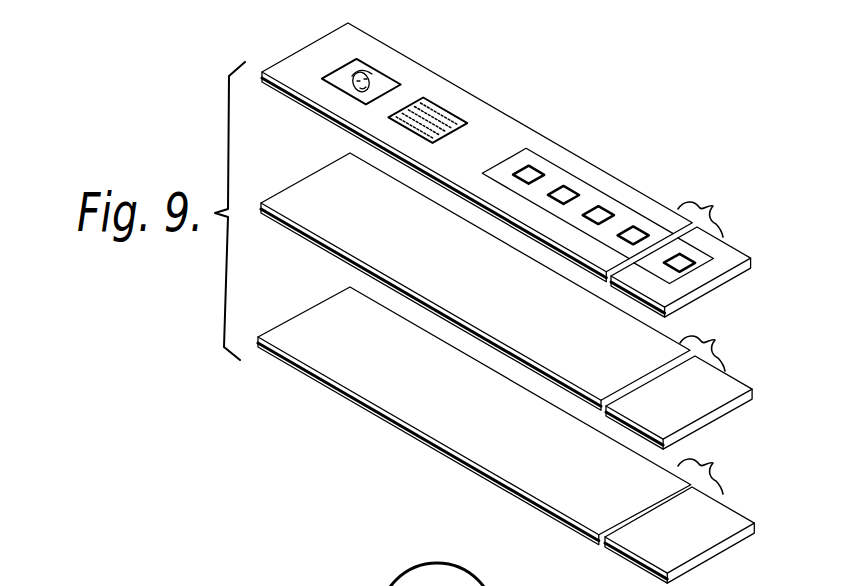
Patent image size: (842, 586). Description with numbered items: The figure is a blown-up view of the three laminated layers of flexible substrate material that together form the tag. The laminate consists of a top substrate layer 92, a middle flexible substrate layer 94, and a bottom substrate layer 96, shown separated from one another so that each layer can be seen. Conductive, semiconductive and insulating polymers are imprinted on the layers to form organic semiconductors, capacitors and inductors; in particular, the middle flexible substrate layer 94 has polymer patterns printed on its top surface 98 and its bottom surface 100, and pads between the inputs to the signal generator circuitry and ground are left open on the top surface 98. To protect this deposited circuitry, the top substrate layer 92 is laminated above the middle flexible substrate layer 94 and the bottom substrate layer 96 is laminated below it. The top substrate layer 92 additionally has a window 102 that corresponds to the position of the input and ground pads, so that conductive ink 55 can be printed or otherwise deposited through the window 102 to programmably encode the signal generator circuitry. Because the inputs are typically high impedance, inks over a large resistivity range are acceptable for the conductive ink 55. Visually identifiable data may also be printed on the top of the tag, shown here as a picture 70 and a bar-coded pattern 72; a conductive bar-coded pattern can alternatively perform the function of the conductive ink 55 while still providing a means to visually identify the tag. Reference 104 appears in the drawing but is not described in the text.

The picture 70 is at (384, 74).
The bar-coded pattern 72 is at (445, 108).
The conductive ink 55 is at (543, 173).
The window 102 is at (608, 195).
The top substrate layer 92 is at (733, 248).
The top surface 98 is at (643, 342).
The middle flexible substrate layer 94 is at (738, 378).
The bottom surface 100 is at (722, 417).
The bottom substrate layer 96 is at (737, 508).
The circular opening 104 is at (78, 585).